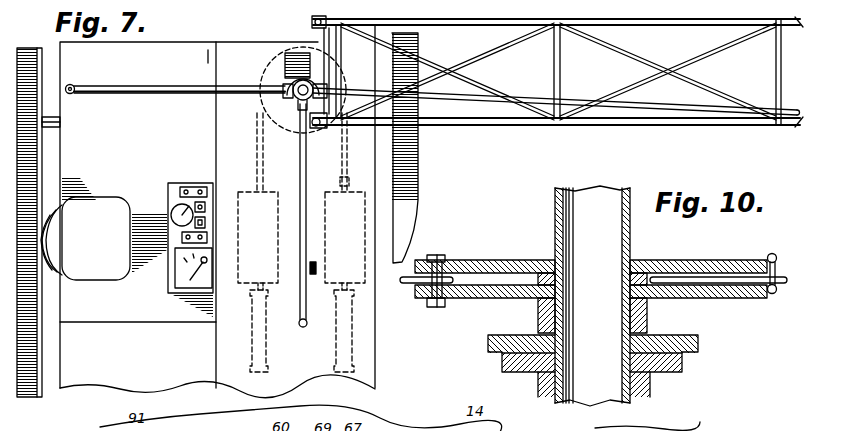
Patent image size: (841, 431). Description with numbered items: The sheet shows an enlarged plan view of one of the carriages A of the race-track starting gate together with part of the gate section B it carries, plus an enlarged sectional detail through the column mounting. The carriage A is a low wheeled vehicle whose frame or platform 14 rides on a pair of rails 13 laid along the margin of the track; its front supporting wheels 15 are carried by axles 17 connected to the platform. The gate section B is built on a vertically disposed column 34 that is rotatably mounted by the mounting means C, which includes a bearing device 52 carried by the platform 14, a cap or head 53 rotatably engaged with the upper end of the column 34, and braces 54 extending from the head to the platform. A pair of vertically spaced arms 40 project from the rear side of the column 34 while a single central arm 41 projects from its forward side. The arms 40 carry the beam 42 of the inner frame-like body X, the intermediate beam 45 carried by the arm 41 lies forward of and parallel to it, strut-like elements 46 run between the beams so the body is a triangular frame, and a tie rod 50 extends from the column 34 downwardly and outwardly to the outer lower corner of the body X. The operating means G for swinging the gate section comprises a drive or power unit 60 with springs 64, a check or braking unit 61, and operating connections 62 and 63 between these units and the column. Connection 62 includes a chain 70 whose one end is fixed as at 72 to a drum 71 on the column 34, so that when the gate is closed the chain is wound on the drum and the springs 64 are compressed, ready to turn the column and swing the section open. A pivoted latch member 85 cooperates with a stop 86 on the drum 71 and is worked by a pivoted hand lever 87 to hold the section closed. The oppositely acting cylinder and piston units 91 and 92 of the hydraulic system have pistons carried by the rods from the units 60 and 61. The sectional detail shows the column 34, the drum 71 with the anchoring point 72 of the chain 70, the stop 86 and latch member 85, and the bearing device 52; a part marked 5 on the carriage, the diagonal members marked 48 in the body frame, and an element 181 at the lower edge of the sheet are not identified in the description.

In FIG. 7, the handle 5 is at (92, 200).
In FIG. 7, the rails 13 is at (27, 301).
In FIG. 7, the frame or platform 14 is at (217, 211).
In FIG. 7, the front supporting wheels 15 is at (32, 90).
In FIG. 7, the axles 17 is at (60, 119).
In FIG. 7, the column 34 is at (300, 101).
In FIG. 10, the column 34 is at (554, 222).
In FIG. 7, the vertically spaced arms 40 is at (320, 129).
In FIG. 7, the central arm 41 is at (312, 24).
In FIG. 7, the beam 42 is at (510, 127).
In FIG. 7, the intermediate beam 45 is at (456, 26).
In FIG. 7, the strut-like elements 46 is at (561, 54).
In FIG. 7, the diagonal truss member 48 is at (488, 56).
In FIG. 7, the tie rod 50 is at (580, 98).
In FIG. 10, the bearing device 52 is at (665, 374).
In FIG. 7, the cap or head 53 is at (285, 70).
In FIG. 7, the braces 54 is at (150, 86).
In FIG. 7, the drive or power unit 60 is at (242, 270).
In FIG. 7, the check or braking unit 61 is at (327, 287).
In FIG. 7, the operating connection 62 is at (256, 164).
In FIG. 7, the operating connection 63 is at (341, 165).
In FIG. 7, the springs 64 is at (418, 426).
In FIG. 10, the chain 70 is at (776, 292).
In FIG. 7, the drum 71 is at (262, 126).
In FIG. 10, the drum 71 is at (675, 260).
In FIG. 10, the chain anchoring point 72 is at (773, 253).
In FIG. 10, the pivoted latch member 85 is at (403, 284).
In FIG. 10, the stop 86 is at (440, 255).
In FIG. 7, the pivoted hand lever 87 is at (316, 264).
In FIG. 7, the cylinder and piston unit 91 is at (250, 328).
In FIG. 7, the cylinder and piston unit 92 is at (334, 355).
In FIG. 7, the component 181 is at (660, 427).
In FIG. 7, the carriage A is at (176, 60).
In FIG. 7, the gate section B is at (682, 126).
In FIG. 7, the mounting means C is at (236, 98).
In FIG. 7, the operating means G is at (385, 426).
In FIG. 7, the body X is at (603, 127).